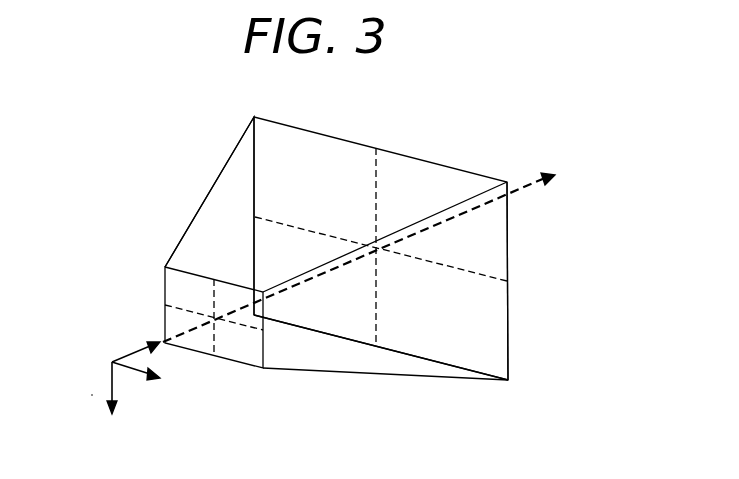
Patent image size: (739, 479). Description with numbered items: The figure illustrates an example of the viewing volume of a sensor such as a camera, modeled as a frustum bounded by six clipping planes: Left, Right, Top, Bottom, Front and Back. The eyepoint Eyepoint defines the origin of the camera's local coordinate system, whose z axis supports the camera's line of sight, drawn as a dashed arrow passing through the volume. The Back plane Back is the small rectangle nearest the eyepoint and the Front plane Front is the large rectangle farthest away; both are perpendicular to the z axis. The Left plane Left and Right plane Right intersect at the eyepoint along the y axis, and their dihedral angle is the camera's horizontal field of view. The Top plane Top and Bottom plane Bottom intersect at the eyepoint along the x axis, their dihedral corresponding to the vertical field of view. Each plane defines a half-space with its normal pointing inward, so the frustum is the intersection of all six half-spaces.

The Front clipping plane Front is at (428, 185).
The Back clipping plane Back is at (185, 310).
The Top clipping plane Top is at (250, 158).
The Left clipping plane Left is at (198, 252).
The Bottom clipping plane Bottom is at (278, 350).
The Right clipping plane Right is at (438, 368).
The eyepoint Eyepoint is at (115, 368).